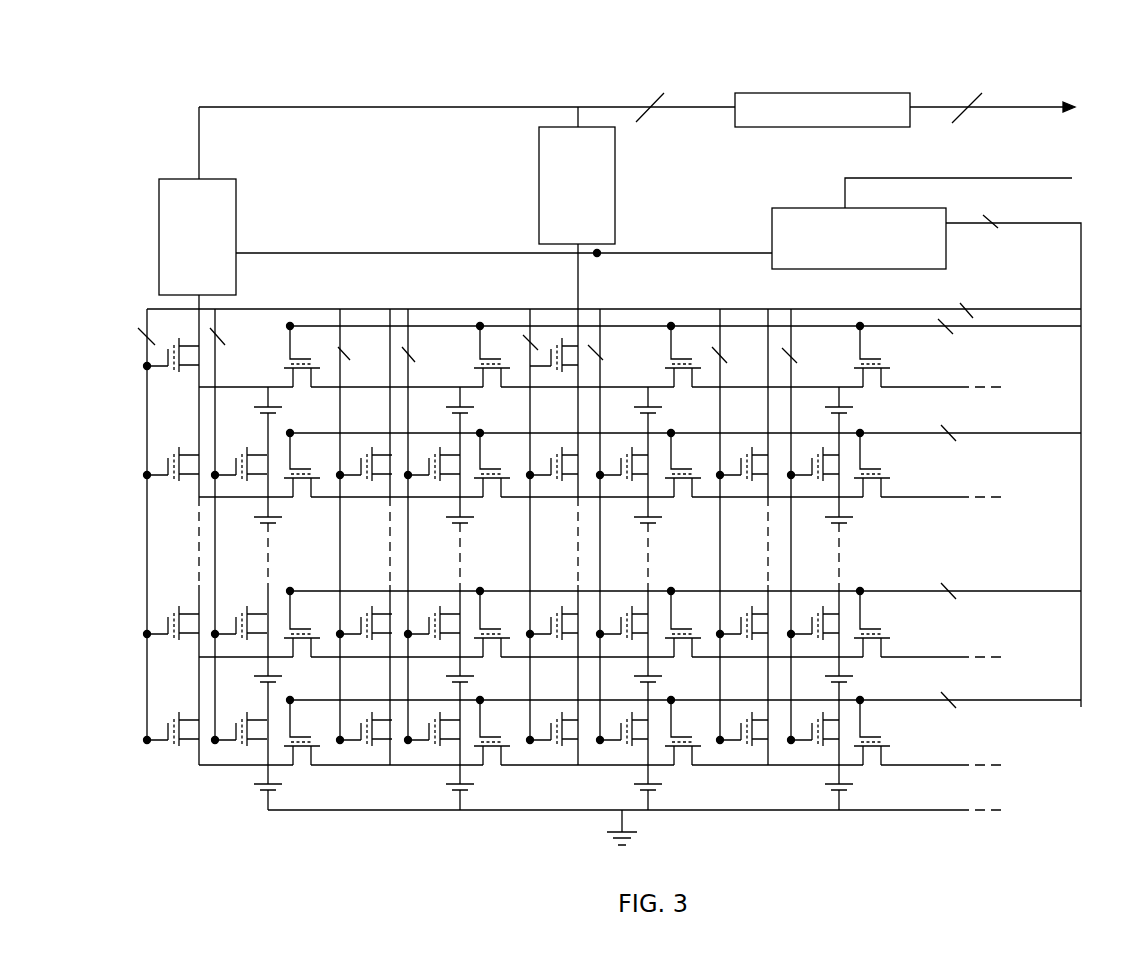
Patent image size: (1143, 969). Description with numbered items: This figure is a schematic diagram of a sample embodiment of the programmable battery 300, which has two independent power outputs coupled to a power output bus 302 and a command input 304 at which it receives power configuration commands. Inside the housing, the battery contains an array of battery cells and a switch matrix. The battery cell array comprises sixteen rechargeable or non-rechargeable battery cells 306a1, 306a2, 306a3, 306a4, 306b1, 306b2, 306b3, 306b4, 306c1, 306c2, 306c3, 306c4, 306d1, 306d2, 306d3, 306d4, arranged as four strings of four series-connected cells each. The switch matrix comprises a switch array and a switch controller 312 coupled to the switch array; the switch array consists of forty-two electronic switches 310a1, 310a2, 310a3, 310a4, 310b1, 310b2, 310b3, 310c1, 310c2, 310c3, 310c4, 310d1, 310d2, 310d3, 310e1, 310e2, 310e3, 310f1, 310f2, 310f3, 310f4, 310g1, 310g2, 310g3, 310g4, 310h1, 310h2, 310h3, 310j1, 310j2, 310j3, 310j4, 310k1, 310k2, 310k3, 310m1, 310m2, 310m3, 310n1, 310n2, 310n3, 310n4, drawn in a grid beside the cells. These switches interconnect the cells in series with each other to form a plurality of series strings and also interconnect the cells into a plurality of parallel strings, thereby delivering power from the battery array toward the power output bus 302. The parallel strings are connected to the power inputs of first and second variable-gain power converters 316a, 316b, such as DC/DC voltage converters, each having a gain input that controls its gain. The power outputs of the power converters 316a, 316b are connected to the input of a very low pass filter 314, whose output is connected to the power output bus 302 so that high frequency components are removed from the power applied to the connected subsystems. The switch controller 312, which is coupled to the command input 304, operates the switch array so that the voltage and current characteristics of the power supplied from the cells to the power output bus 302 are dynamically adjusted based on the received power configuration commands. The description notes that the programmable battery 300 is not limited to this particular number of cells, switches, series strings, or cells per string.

The programmable battery 300 is at (382, 903).
The power output bus 302 is at (1014, 108).
The command input 304 is at (979, 189).
The switch controller 312 is at (946, 258).
The very low pass filter 314 is at (840, 127).
The first variable-gain power converter 316a is at (237, 227).
The second variable-gain power converter 316b is at (615, 198).
The battery cell 306a1 is at (290, 792).
The battery cell 306a2 is at (290, 678).
The battery cell 306a3 is at (290, 519).
The battery cell 306a4 is at (290, 409).
The battery cell 306b1 is at (482, 792).
The battery cell 306b2 is at (482, 678).
The battery cell 306b3 is at (482, 519).
The battery cell 306b4 is at (482, 409).
The battery cell 306c1 is at (669, 792).
The battery cell 306c2 is at (669, 678).
The battery cell 306c3 is at (669, 519).
The battery cell 306c4 is at (669, 409).
The battery cell 306d1 is at (861, 792).
The battery cell 306d2 is at (861, 678).
The battery cell 306d3 is at (861, 519).
The battery cell 306d4 is at (861, 409).
The electronic switch 310a1 is at (172, 737).
The electronic switch 310a2 is at (172, 631).
The electronic switch 310a3 is at (172, 472).
The electronic switch 310a4 is at (172, 363).
The electronic switch 310b1 is at (240, 721).
The electronic switch 310b2 is at (240, 615).
The electronic switch 310b3 is at (240, 456).
The electronic switch 310c1 is at (308, 731).
The electronic switch 310c2 is at (308, 623).
The electronic switch 310c3 is at (308, 464).
The electronic switch 310c4 is at (308, 355).
The electronic switch 310d1 is at (365, 737).
The electronic switch 310d2 is at (365, 631).
The electronic switch 310d3 is at (365, 472).
The electronic switch 310e1 is at (433, 737).
The electronic switch 310e2 is at (433, 631).
The electronic switch 310e3 is at (433, 472).
The electronic switch 310f1 is at (497, 731).
The electronic switch 310f2 is at (497, 623).
The electronic switch 310f3 is at (497, 464).
The electronic switch 310f4 is at (497, 355).
The electronic switch 310g1 is at (553, 737).
The electronic switch 310g2 is at (553, 631).
The electronic switch 310g3 is at (553, 472).
The electronic switch 310g4 is at (554, 363).
The electronic switch 310h1 is at (623, 737).
The electronic switch 310h2 is at (623, 631).
The electronic switch 310h3 is at (623, 472).
The electronic switch 310j1 is at (687, 731).
The electronic switch 310j2 is at (687, 623).
The electronic switch 310j3 is at (687, 464).
The electronic switch 310j4 is at (687, 355).
The electronic switch 310k1 is at (743, 737).
The electronic switch 310k2 is at (743, 631).
The electronic switch 310k3 is at (743, 472).
The electronic switch 310m1 is at (814, 737).
The electronic switch 310m2 is at (814, 631).
The electronic switch 310m3 is at (814, 472).
The electronic switch 310n1 is at (878, 731).
The electronic switch 310n2 is at (878, 623).
The electronic switch 310n3 is at (878, 464).
The electronic switch 310n4 is at (878, 355).